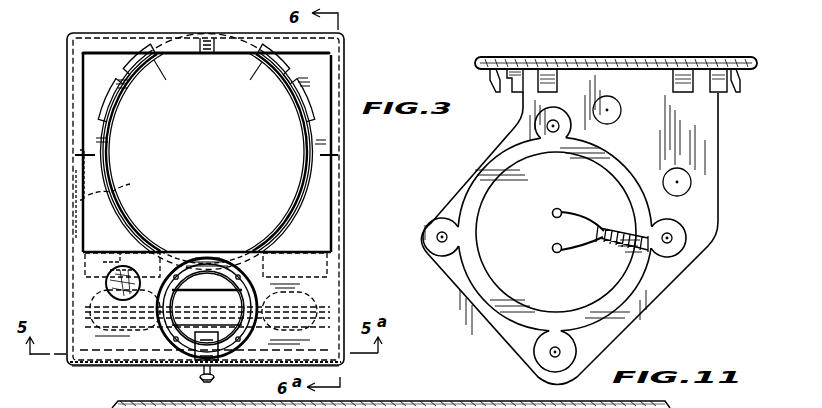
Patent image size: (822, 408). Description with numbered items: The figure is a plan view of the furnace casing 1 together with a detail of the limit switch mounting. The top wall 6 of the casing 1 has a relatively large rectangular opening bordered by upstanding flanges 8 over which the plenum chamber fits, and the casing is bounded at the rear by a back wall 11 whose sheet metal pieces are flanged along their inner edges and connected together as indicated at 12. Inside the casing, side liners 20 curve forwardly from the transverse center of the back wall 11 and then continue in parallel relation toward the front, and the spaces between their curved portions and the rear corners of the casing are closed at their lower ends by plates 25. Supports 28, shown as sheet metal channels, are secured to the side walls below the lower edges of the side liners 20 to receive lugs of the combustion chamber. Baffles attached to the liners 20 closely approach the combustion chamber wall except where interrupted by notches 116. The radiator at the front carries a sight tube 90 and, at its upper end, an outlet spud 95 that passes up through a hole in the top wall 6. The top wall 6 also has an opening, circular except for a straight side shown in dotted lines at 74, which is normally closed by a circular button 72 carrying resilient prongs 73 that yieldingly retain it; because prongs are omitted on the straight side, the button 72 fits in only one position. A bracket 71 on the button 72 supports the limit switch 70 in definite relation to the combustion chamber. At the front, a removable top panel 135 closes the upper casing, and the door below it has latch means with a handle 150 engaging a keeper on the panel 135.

In FIG. 3, the casing 1 is at (353, 220).
In FIG. 3, the top wall 6 is at (325, 287).
In FIG. 3, the upstanding flanges 8 is at (130, 53).
In FIG. 3, the back wall 11 is at (345, 401).
In FIG. 3, the connection of back wall pieces 12 is at (410, 401).
In FIG. 3, the side liners 20 is at (106, 98).
In FIG. 3, the plates 25 is at (318, 72).
In FIG. 3, the supports 28 is at (130, 186).
In FIG. 11, the limit switch 70 is at (503, 193).
In FIG. 11, the bracket 71 is at (707, 233).
In FIG. 3, the button 72 is at (112, 276).
In FIG. 11, the button 72 is at (682, 57).
In FIG. 11, the resilient prongs 73 is at (516, 95).
In FIG. 3, the opening 74 is at (154, 248).
In FIG. 3, the sight tube 90 is at (253, 336).
In FIG. 3, the outlet spud 95 is at (187, 348).
In FIG. 3, the notches 116 is at (127, 105).
In FIG. 3, the top panel 135 is at (104, 368).
In FIG. 3, the handle 150 is at (210, 382).